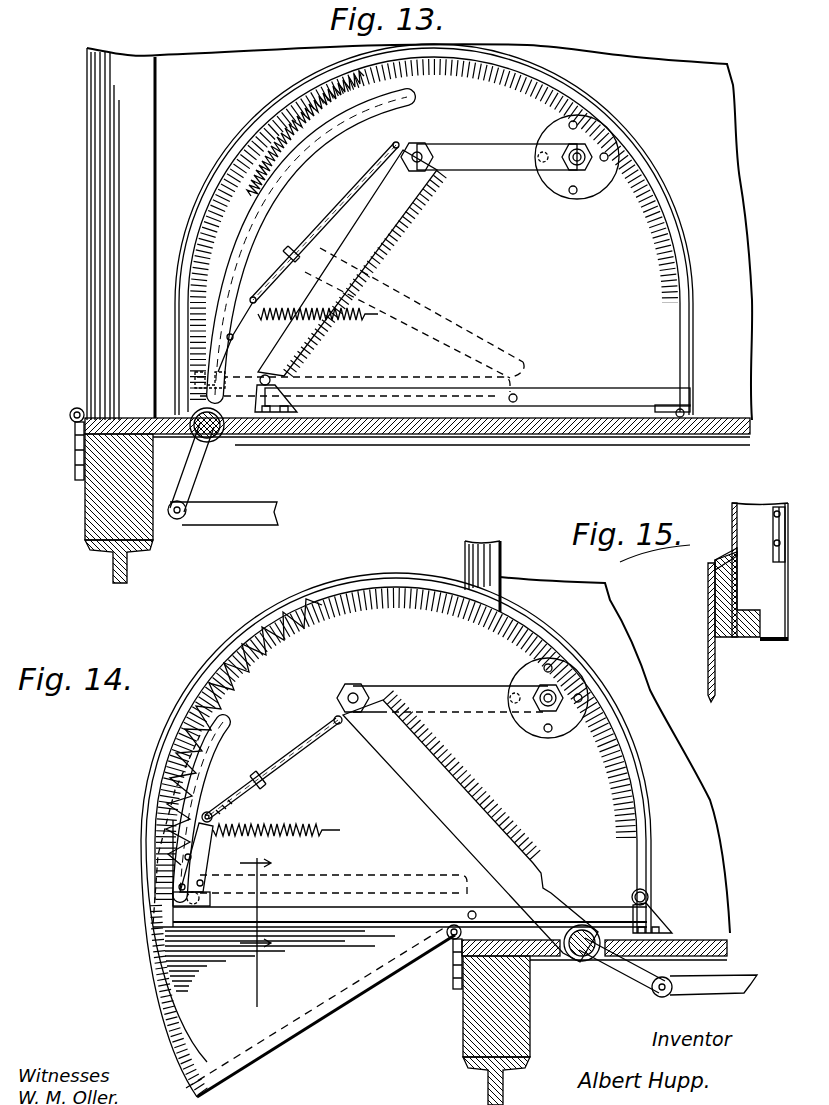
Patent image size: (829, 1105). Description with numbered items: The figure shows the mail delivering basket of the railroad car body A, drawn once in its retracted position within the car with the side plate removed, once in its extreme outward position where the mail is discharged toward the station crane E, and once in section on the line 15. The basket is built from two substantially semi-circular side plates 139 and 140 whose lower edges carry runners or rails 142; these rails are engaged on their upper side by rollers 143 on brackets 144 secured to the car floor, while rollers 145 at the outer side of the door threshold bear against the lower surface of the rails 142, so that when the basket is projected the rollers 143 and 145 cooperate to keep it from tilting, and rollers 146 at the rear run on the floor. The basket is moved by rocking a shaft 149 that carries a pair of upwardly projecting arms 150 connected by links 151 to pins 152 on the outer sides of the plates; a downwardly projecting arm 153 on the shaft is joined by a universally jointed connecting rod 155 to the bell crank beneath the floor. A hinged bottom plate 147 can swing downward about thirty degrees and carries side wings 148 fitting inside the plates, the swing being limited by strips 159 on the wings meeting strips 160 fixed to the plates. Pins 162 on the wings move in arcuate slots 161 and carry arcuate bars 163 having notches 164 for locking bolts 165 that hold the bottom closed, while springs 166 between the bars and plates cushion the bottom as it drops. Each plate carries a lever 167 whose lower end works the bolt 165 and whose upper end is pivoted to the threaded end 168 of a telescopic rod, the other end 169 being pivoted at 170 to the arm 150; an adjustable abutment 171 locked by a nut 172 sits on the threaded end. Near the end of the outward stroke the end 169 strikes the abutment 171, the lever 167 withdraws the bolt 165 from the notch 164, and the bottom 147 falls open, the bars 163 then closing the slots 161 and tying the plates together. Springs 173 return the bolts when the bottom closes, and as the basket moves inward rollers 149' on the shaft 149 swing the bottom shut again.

In FIG. 15, the side plate 139 is at (732, 517).
In FIG. 13, the side plate 140 is at (434, 229).
In FIG. 14, the side plate 140 is at (396, 835).
In FIG. 13, the runners or rails 142 is at (573, 393).
In FIG. 14, the runners or rails 142 is at (603, 906).
In FIG. 13, the rollers 143 is at (282, 380).
In FIG. 14, the rollers 143 is at (634, 893).
In FIG. 14, the brackets 144 is at (655, 921).
In FIG. 13, the rollers 145 is at (75, 408).
In FIG. 14, the rollers 145 is at (450, 945).
In FIG. 13, the rollers 146 is at (690, 410).
In FIG. 14, the hinged bottom plate 147 is at (299, 1027).
In FIG. 15, the side plates or wings 148 is at (715, 667).
In FIG. 14, the side plates or wings 148 is at (275, 998).
In FIG. 14, the shaft 149 is at (584, 965).
In FIG. 14, the rollers 149' is at (573, 959).
In FIG. 13, the arms 150 is at (287, 340).
In FIG. 14, the arms 150 is at (500, 840).
In FIG. 13, the links 151 is at (467, 167).
In FIG. 14, the links 151 is at (418, 688).
In FIG. 13, the pins 152 is at (574, 166).
In FIG. 14, the pins 152 is at (554, 709).
In FIG. 13, the arm 153 is at (203, 461).
In FIG. 14, the arm 153 is at (636, 990).
In FIG. 14, the universally jointed connecting rod 155 is at (688, 990).
In FIG. 15, the strips 159 is at (720, 556).
In FIG. 15, the strips 160 is at (712, 607).
In FIG. 14, the arcuate slots 161 is at (188, 770).
In FIG. 13, the pins 162 is at (268, 205).
In FIG. 14, the pins 162 is at (145, 927).
In FIG. 13, the arcuate bars 163 is at (412, 113).
In FIG. 14, the arcuate bars 163 is at (178, 960).
In FIG. 14, the notches 164 is at (210, 1060).
In FIG. 13, the locking bolts 165 is at (212, 382).
In FIG. 13, the springs 166 is at (300, 132).
In FIG. 14, the springs 166 is at (290, 660).
In FIG. 14, the lever 167 is at (190, 866).
In FIG. 14, the end of telescopic rod 168 is at (238, 800).
In FIG. 14, the end of telescopic rod 169 is at (300, 753).
In FIG. 14, the pivot 170 is at (334, 717).
In FIG. 14, the adjustable nut or abutment 171 is at (268, 786).
In FIG. 14, the nut 172 is at (258, 773).
In FIG. 13, the springs 173 is at (350, 322).
In FIG. 14, the springs 173 is at (298, 822).
In FIG. 14, the section line 15 is at (255, 923).
In FIG. 13, the car body A is at (90, 190).
In FIG. 14, the car body A is at (465, 566).
In FIG. 13, the station crane E is at (633, 153).
In FIG. 14, the station crane E is at (391, 582).